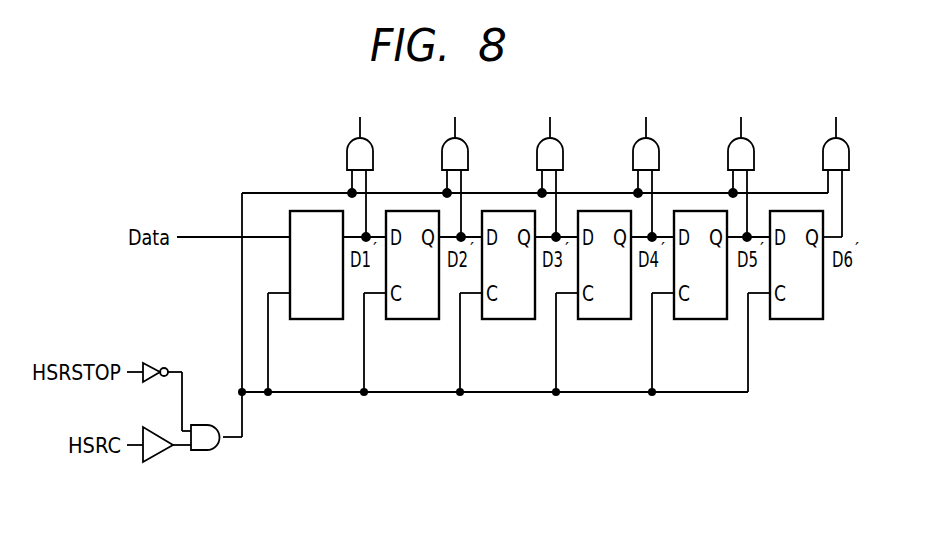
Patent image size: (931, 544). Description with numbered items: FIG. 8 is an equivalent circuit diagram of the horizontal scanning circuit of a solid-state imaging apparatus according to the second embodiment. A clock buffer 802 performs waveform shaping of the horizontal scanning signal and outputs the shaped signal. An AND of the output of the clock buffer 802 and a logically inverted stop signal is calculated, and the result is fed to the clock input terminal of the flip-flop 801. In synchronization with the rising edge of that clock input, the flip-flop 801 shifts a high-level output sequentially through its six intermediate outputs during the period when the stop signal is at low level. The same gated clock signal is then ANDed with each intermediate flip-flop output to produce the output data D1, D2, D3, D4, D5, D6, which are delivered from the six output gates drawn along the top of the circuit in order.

The flip-flop 801 is at (321, 319).
The clock buffer 802 is at (205, 450).
The data D1 is at (360, 165).
The data D2 is at (455, 165).
The data D3 is at (550, 165).
The data D4 is at (646, 165).
The data D5 is at (741, 165).
The data D6 is at (835, 163).